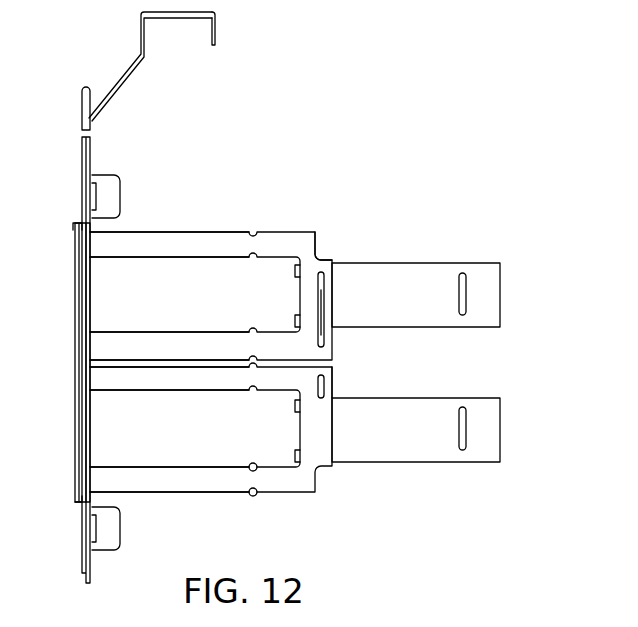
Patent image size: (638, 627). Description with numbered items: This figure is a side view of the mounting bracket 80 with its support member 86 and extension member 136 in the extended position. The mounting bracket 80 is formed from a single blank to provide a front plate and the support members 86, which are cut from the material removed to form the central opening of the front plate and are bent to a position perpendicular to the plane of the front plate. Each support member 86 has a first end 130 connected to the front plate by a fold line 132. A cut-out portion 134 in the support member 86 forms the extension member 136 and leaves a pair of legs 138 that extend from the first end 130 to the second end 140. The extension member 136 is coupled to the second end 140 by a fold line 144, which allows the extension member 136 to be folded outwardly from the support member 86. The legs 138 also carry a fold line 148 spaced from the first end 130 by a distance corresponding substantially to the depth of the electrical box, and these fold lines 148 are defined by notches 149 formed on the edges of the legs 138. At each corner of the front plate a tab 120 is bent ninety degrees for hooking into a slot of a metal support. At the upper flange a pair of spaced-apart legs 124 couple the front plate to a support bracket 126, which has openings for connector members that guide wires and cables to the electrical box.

The mounting bracket 80 is at (306, 138).
The support member 86 is at (311, 224).
The tab 120 is at (122, 190).
The leg 124 is at (120, 80).
The support bracket 126 is at (218, 30).
The first end 130 is at (98, 465).
The fold line 132 is at (92, 482).
The cut-out portion 134 is at (233, 272).
The extension member 136 is at (423, 262).
The leg 138 is at (132, 243).
The second end 140 is at (318, 248).
The fold line 144 is at (295, 320).
The fold line 148 is at (253, 482).
The notch 149 is at (253, 465).